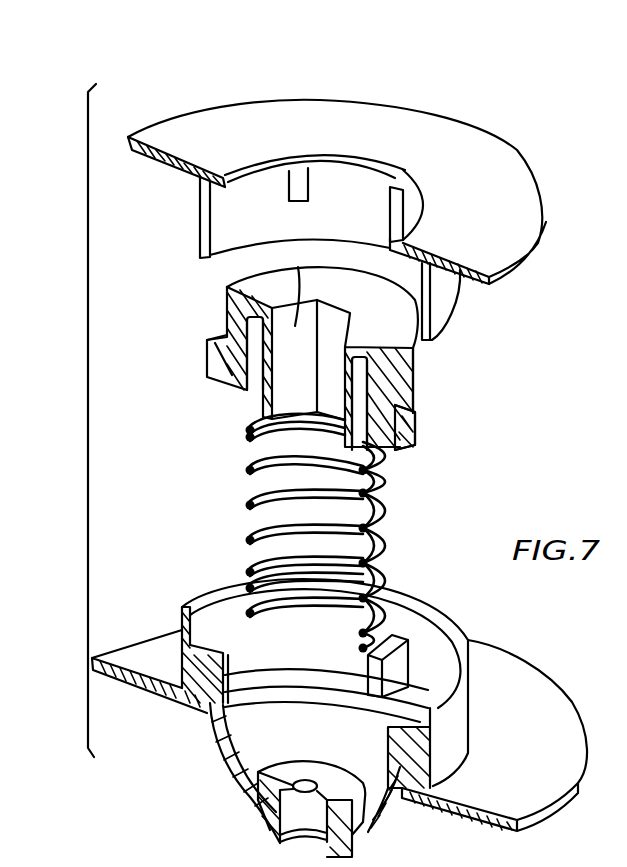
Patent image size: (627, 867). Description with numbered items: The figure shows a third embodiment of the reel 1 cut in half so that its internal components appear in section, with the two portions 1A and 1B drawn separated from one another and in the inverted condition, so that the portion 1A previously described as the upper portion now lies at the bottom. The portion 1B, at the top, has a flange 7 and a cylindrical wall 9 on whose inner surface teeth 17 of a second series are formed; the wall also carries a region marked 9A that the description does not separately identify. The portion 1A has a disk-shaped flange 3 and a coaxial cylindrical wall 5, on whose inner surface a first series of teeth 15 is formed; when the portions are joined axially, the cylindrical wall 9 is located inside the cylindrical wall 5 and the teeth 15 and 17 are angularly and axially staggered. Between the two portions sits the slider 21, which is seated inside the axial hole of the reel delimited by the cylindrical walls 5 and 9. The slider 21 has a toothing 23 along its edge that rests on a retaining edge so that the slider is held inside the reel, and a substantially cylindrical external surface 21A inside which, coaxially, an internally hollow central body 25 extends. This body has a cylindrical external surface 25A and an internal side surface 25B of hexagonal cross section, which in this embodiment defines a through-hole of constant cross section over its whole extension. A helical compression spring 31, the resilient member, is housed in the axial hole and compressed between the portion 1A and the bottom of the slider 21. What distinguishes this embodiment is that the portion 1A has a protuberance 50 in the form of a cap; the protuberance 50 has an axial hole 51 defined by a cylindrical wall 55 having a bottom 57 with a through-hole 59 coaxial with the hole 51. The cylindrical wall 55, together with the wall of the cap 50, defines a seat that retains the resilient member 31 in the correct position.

The reel 1 is at (87, 413).
The portion of the reel 1A is at (359, 715).
The portion of the reel 1B is at (358, 220).
The disk-shaped flange 3 is at (553, 773).
The cylindrical wall 5 is at (453, 710).
The flange 7 is at (533, 206).
The cylindrical wall 9 is at (457, 301).
The skirt rib 9A is at (200, 232).
The teeth of the first series 15 is at (227, 668).
The teeth of the second series 17 is at (287, 196).
The slider 21 is at (322, 348).
The cylindrical external surface of the slider 21A is at (410, 394).
The toothing 23 is at (214, 361).
The central body 25 is at (263, 403).
The cylindrical external surface of the body 25A is at (362, 386).
The hexagonal internal surface 25B is at (304, 286).
The helical compression spring 31 is at (381, 507).
The protuberance 50 is at (382, 836).
The axial hole 51 is at (311, 829).
The cylindrical wall 55 is at (268, 810).
The bottom 57 is at (342, 773).
The through-hole 59 is at (308, 782).